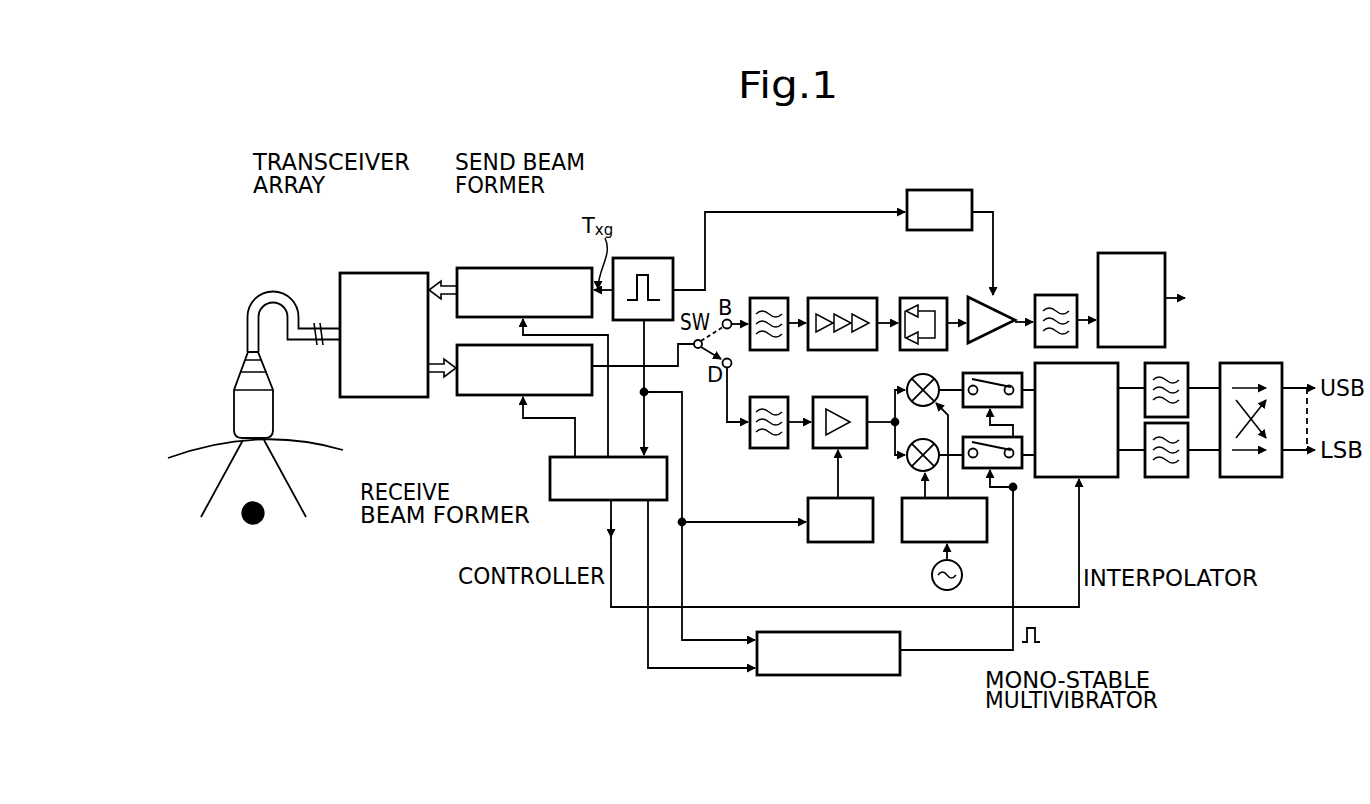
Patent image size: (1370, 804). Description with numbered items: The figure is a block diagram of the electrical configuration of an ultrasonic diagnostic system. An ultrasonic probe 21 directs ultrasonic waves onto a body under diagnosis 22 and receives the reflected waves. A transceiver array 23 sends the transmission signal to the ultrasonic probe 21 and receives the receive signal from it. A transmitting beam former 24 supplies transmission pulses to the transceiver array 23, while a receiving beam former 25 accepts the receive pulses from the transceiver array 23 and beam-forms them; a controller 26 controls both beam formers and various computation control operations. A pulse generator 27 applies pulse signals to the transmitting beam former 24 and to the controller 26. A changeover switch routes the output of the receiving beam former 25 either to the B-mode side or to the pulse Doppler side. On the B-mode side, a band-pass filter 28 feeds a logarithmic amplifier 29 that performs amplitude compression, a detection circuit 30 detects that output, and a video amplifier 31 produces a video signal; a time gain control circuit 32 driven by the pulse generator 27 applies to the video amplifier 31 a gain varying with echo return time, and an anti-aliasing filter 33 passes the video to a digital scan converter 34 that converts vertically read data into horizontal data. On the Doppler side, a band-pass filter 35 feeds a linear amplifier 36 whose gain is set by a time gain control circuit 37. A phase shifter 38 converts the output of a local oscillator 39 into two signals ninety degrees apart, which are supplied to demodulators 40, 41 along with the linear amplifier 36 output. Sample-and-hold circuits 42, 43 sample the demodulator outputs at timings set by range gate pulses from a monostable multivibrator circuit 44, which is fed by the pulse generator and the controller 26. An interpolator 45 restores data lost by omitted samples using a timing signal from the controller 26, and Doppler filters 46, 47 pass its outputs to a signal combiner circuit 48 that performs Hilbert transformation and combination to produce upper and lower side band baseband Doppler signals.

The ultrasonic probe 21 is at (233, 398).
The body under diagnosis 22 is at (343, 450).
The transceiver array 23 is at (370, 273).
The transmitting beam former 24 is at (500, 268).
The receiving beam former 25 is at (463, 396).
The controller 26 is at (560, 500).
The pulse generator 27 is at (648, 258).
The band-pass filter 28 is at (765, 298).
The logarithmic amplifier 29 is at (840, 298).
The detection circuit 30 is at (915, 298).
The video amplifier 31 is at (1003, 306).
The time gain control circuit 32 is at (950, 190).
The anti-aliasing filter 33 is at (1062, 295).
The digital scan converter 34 is at (1128, 253).
The band-pass filter 35 is at (758, 449).
The linear amplifier 36 is at (818, 449).
The time gain control circuit 37 is at (808, 532).
The phase shifter 38 is at (922, 543).
The local oscillator 39 is at (932, 587).
The demodulator 40 is at (911, 378).
The demodulator 41 is at (912, 468).
The sample-and-hold circuit 42 is at (985, 373).
The sample-and-hold circuit 43 is at (1020, 469).
The monostable multivibrator circuit 44 is at (900, 672).
The interpolator 45 is at (1092, 478).
The Doppler filter 46 is at (1170, 363).
The Doppler filter 47 is at (1168, 478).
The signal combiner circuit 48 is at (1262, 363).